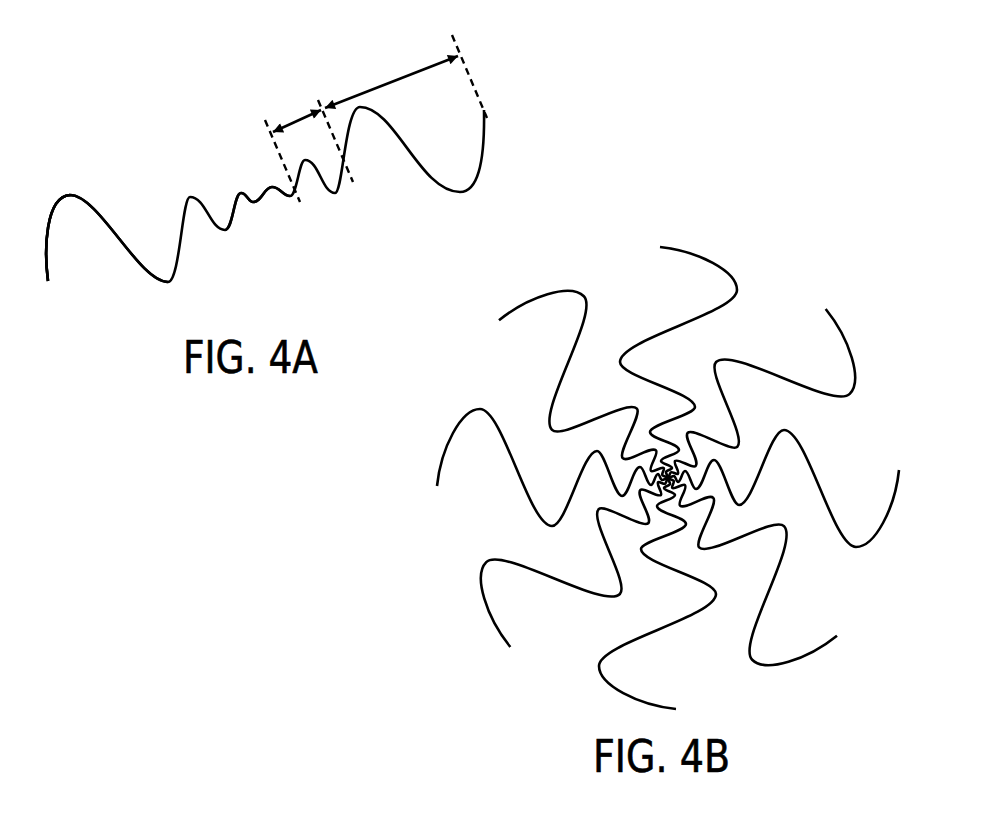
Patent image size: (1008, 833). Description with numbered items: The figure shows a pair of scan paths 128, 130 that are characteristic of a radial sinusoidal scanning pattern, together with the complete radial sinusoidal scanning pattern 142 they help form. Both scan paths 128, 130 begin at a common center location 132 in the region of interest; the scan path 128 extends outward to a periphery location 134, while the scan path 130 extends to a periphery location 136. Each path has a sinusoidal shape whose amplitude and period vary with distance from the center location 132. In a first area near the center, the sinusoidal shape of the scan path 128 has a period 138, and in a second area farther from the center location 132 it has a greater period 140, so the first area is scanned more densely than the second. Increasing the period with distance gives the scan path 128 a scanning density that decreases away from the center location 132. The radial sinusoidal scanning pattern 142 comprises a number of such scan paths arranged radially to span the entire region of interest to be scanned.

In FIG. 4A, the scan path 128 is at (443, 193).
In FIG. 4A, the scan path 130 is at (72, 188).
In FIG. 4A, the center location 132 is at (259, 188).
In FIG. 4A, the periphery location 134 is at (487, 76).
In FIG. 4A, the periphery location 136 is at (38, 254).
In FIG. 4A, the period 138 is at (303, 115).
In FIG. 4A, the period 140 is at (378, 80).
In FIG. 4B, the radial sinusoidal scanning pattern 142 is at (791, 240).